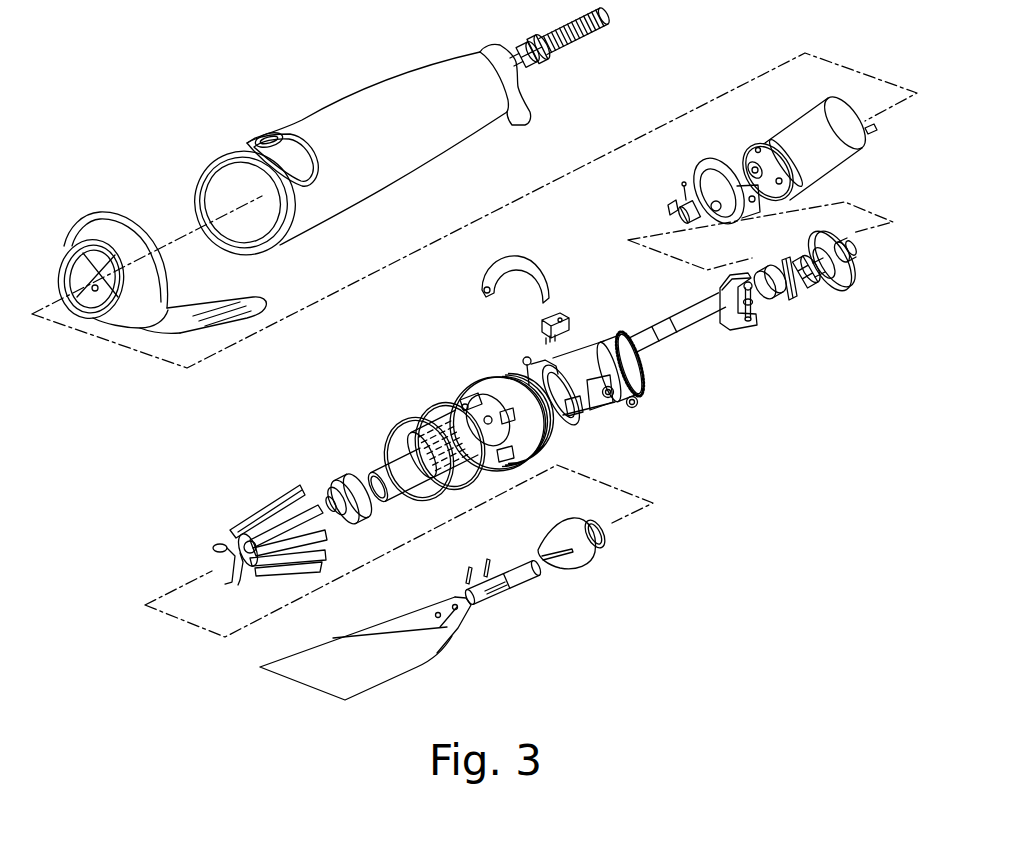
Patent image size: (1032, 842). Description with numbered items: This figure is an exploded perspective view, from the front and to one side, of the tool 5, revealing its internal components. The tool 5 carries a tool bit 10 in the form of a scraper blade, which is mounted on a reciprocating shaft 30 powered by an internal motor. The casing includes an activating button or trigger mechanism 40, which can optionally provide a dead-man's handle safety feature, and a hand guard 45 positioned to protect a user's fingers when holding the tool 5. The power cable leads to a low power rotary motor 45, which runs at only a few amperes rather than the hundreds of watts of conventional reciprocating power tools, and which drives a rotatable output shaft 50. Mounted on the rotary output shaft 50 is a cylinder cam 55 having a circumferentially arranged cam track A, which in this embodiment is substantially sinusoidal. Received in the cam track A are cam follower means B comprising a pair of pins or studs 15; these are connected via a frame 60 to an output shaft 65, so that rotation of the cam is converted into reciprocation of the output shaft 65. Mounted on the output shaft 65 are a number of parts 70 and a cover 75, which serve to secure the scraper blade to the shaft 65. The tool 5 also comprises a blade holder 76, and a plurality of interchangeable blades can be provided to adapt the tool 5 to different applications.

The tool 5 is at (717, 471).
The tool bit 10 is at (372, 677).
The pins or studs 15 is at (748, 321).
The reciprocating shaft 30 is at (507, 590).
The activating button or trigger mechanism 40 is at (274, 134).
The low power rotary motor 45 is at (197, 325).
The rotatable output shaft 50 is at (743, 143).
The cylinder cam 55 is at (768, 266).
The frame 60 is at (719, 292).
The output shaft 65 is at (672, 328).
The parts 70 is at (593, 417).
The cover 75 is at (573, 563).
The blade holder 76 is at (480, 607).
The cam track A is at (800, 292).
The cam follower means B is at (763, 303).